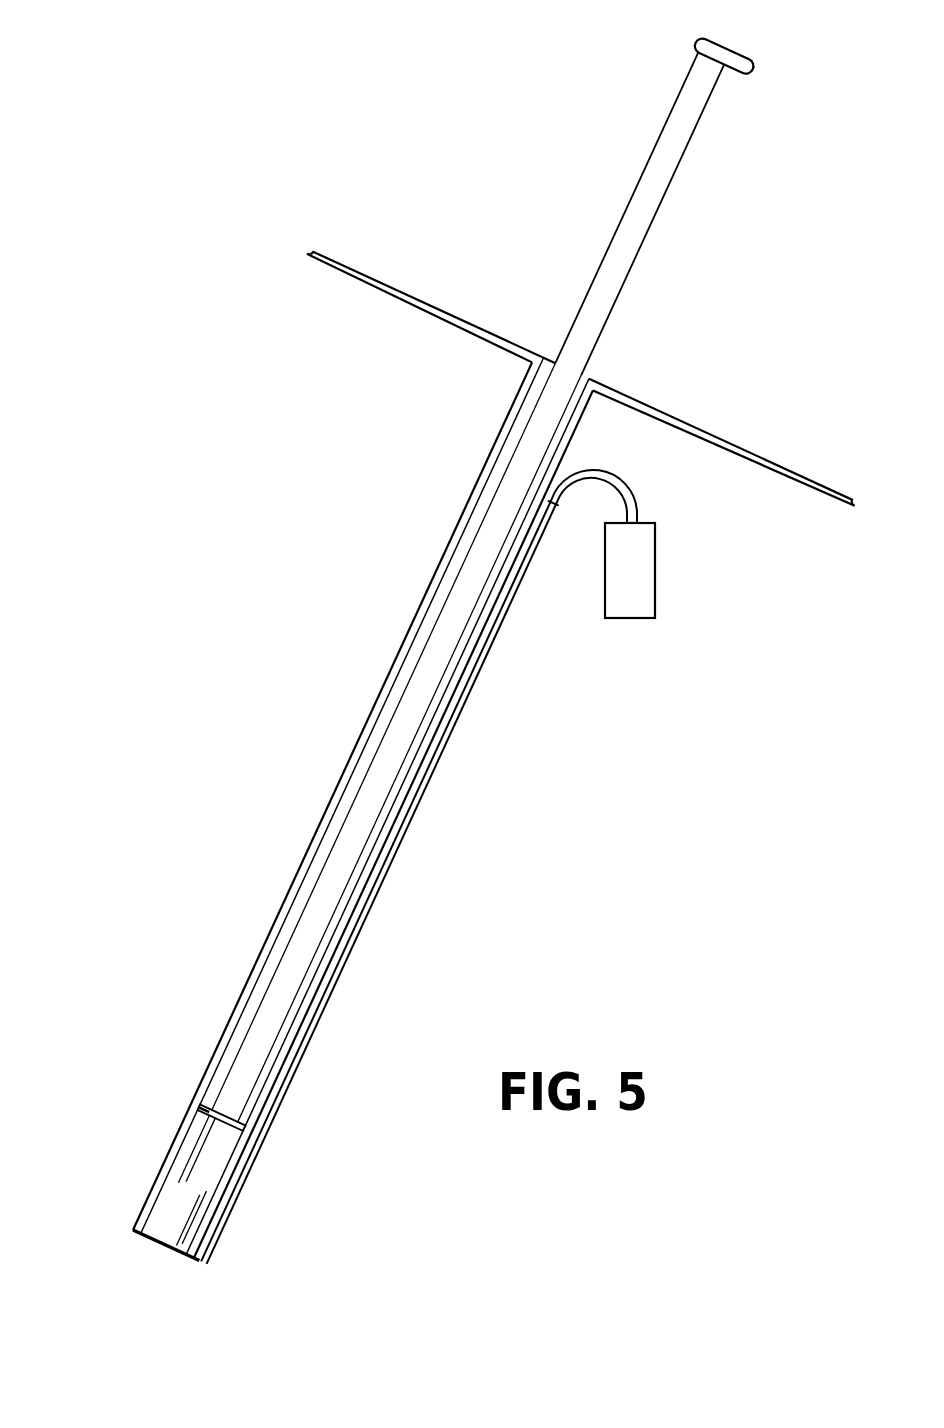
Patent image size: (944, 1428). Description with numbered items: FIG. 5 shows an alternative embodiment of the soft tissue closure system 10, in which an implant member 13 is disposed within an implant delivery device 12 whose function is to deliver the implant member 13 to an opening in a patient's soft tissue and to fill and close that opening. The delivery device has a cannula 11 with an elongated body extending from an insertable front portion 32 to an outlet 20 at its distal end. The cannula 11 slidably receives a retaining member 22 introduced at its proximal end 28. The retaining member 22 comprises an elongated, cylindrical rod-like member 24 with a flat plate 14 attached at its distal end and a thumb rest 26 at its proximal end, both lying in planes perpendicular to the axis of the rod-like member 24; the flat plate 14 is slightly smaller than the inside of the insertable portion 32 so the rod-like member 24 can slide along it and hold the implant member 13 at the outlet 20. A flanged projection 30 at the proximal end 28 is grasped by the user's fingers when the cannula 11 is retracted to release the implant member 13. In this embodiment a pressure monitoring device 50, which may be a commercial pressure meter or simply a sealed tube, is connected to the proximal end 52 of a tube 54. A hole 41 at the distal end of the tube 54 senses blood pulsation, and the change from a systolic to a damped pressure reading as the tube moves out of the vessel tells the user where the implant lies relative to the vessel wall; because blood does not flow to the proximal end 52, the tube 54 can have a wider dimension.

The soft tissue closure system 10 is at (556, 781).
The cannula 11 is at (410, 648).
The implant delivery device 12 is at (350, 729).
The implant member 13 is at (193, 1186).
The flat plate 14 is at (245, 1128).
The outlet 20 is at (155, 1244).
The retaining member 22 is at (692, 178).
The rod-like member 24 is at (347, 862).
The thumb rest 26 is at (749, 58).
The proximal end 28 is at (603, 376).
The flanged projection 30 is at (745, 450).
The insertable front portion 32 is at (198, 1110).
The hole 41 is at (192, 1265).
The pressure monitoring device 50 is at (641, 582).
The proximal end of tube 52 is at (577, 464).
The tube 54 is at (338, 961).